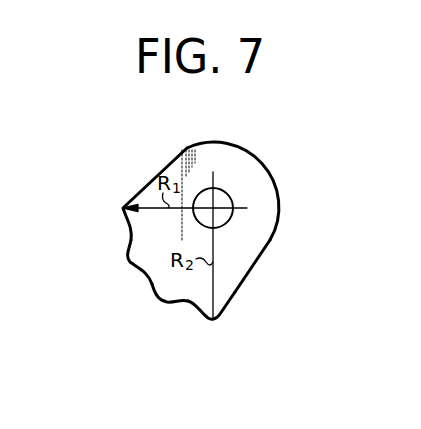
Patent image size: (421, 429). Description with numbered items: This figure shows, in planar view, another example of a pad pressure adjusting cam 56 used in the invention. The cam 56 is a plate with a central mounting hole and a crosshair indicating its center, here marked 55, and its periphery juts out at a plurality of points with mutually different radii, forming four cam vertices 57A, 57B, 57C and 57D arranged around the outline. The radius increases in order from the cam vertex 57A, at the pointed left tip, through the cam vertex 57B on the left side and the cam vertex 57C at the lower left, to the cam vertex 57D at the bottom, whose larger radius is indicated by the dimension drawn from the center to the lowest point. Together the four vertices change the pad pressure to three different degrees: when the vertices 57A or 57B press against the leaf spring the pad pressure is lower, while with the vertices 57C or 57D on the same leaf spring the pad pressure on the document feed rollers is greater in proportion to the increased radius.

The cam plate 55 is at (222, 220).
The pad pressure adjusting cam 56 is at (251, 153).
The cam vertex 57A is at (123, 208).
The cam vertex 57B is at (128, 260).
The cam vertex 57C is at (160, 301).
The cam vertex 57D is at (213, 320).